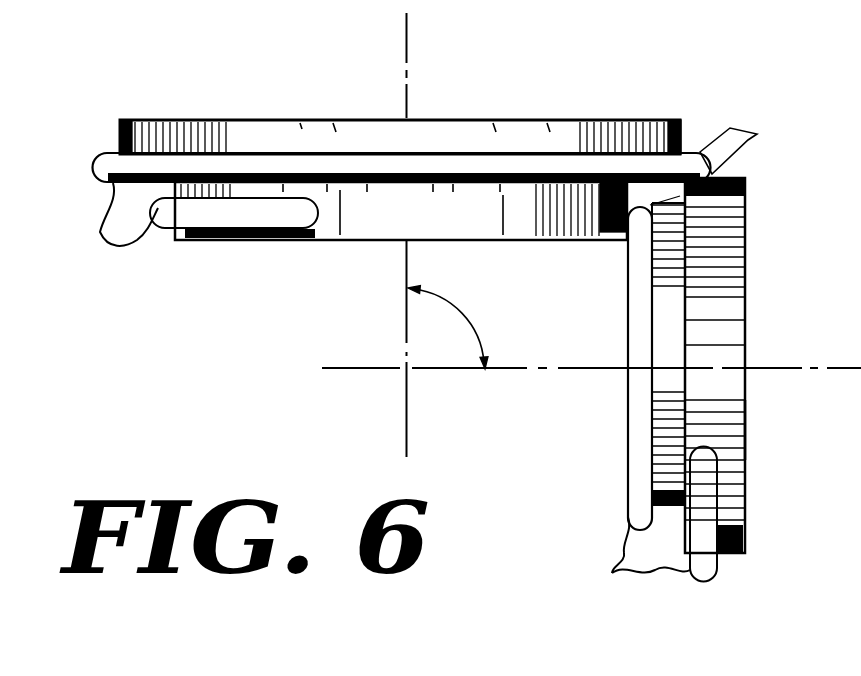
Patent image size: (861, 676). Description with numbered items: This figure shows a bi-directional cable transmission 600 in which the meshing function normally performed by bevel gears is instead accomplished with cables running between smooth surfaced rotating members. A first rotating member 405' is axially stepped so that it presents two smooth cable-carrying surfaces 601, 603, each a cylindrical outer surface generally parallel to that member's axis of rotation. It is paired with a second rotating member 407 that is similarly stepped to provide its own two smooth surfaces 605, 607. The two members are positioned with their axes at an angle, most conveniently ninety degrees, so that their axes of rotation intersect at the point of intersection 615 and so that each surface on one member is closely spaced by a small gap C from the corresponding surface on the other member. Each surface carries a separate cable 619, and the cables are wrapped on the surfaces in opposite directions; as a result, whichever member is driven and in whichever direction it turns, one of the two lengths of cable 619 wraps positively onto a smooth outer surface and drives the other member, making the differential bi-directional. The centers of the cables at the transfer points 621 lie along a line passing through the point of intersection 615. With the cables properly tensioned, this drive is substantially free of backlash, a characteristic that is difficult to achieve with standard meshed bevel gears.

The hinge assembly 600 is at (686, 107).
The smooth cable-carrying surface 601 is at (293, 130).
The rotating member 405' is at (402, 125).
The smooth cable-carrying surface 603 is at (322, 240).
The bracket 619 is at (100, 233).
The transfer points 621 is at (757, 134).
The smooth cable-carrying surface 607 is at (660, 393).
The vertical plate 407 is at (742, 242).
The smooth cable-carrying surface 605 is at (746, 430).
The point of intersection 615 is at (404, 369).
The corner joint C is at (617, 243).